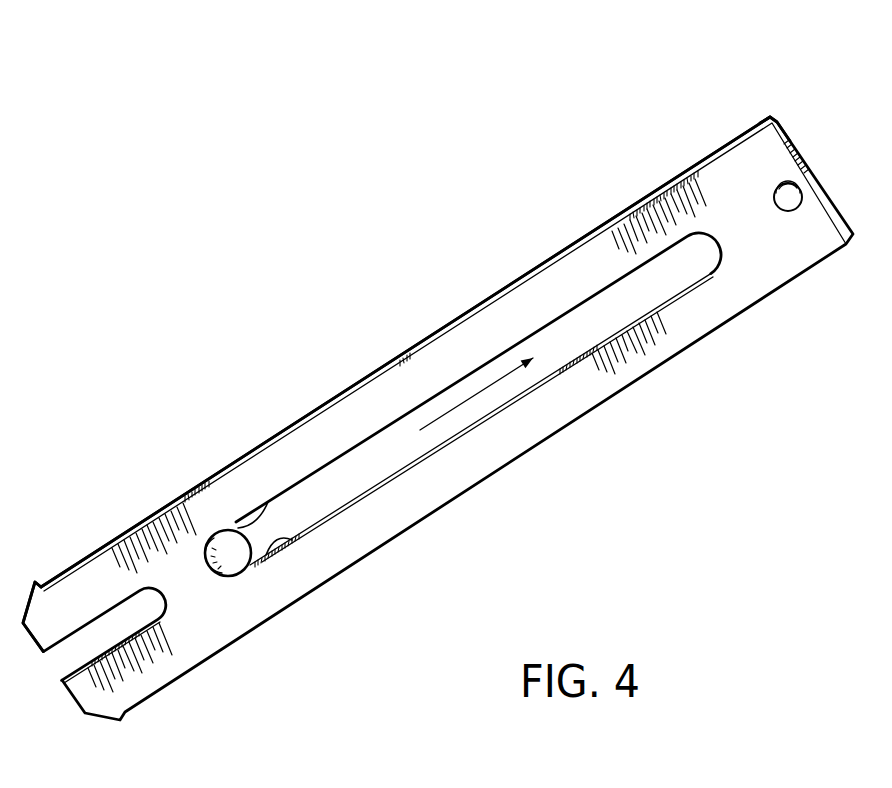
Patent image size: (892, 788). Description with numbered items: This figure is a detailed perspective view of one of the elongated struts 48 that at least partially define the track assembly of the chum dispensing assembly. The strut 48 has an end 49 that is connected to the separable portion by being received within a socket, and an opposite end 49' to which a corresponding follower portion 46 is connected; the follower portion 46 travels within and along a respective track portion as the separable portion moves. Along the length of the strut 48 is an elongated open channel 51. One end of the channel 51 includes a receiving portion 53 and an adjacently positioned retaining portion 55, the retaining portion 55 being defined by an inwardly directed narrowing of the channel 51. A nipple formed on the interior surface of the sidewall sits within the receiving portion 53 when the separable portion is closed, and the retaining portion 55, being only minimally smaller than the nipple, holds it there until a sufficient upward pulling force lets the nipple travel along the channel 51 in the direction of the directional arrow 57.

The follower portion 46 is at (820, 180).
The elongated strut 48 is at (447, 305).
The end of strut 49 is at (68, 556).
The opposite end of strut 49' is at (797, 82).
The elongated open channel 51 is at (478, 418).
The receiving portion 53 is at (243, 578).
The retaining portion 55 is at (266, 502).
The directional arrow 57 is at (420, 430).